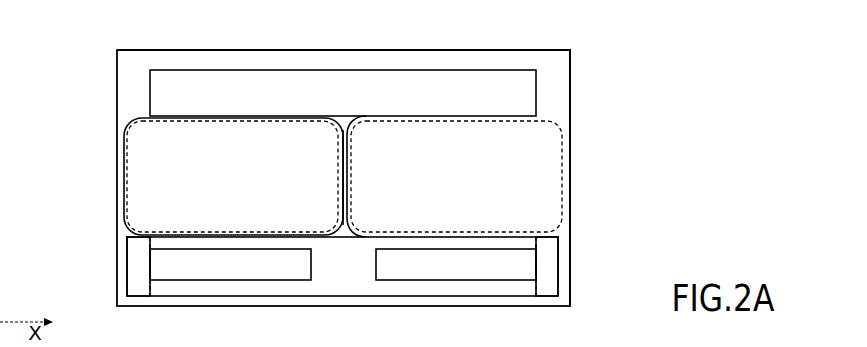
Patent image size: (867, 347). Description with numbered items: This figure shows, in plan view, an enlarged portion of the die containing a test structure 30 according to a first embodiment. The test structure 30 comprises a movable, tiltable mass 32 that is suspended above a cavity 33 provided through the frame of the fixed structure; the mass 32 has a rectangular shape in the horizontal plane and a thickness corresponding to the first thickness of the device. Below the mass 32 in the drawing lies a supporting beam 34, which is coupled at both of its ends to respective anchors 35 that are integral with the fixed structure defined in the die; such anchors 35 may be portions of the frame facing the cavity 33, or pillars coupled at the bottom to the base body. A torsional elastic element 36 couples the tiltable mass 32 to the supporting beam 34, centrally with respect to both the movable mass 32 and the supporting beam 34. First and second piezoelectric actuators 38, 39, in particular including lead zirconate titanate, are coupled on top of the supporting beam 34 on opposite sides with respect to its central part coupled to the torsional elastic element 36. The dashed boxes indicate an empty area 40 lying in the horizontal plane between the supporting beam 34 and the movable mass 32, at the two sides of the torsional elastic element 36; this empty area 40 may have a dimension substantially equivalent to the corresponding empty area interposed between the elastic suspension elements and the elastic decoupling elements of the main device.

The test structure 30 is at (613, 86).
The movable mass 32 is at (384, 95).
The cavity 33 is at (566, 74).
The supporting beam 34 is at (364, 277).
The anchors 35 is at (133, 270).
The torsional elastic element 36 is at (347, 152).
The first piezoelectric actuator 38 is at (256, 269).
The second piezoelectric actuator 39 is at (463, 273).
The empty area 40 is at (122, 170).